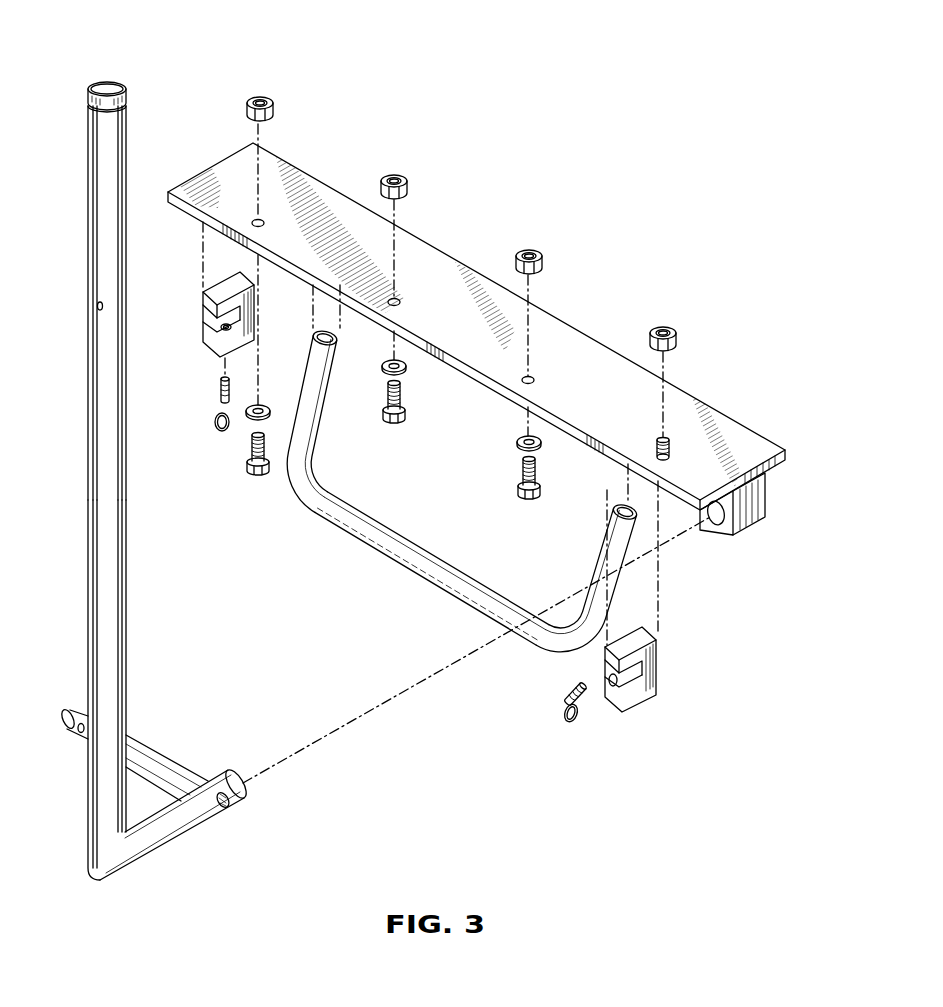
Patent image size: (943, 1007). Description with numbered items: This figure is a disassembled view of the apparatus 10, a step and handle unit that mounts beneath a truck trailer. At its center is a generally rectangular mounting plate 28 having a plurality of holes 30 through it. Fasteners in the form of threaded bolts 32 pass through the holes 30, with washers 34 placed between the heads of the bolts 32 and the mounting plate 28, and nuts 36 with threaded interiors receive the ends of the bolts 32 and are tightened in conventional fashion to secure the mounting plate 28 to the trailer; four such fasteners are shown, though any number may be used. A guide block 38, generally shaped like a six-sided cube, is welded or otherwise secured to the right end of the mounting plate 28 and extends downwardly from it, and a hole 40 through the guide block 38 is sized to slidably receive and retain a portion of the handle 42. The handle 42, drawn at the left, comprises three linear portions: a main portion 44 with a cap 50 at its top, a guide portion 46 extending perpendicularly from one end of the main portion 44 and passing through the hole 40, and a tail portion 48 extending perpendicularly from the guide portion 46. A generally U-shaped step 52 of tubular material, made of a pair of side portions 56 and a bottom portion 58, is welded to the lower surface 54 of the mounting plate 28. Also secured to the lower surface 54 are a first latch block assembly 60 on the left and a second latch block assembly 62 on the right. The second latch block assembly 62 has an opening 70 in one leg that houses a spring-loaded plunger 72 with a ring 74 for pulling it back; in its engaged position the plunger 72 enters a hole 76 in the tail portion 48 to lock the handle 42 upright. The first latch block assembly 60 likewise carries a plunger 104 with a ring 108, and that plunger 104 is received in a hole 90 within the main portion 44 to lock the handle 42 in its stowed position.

The apparatus 10 is at (606, 121).
The mounting plate 28 is at (229, 166).
The holes 30 is at (260, 219).
The threaded bolts 32 is at (255, 474).
The washers 34 is at (262, 407).
The nuts 36 is at (273, 100).
The guide block 38 is at (748, 536).
The hole 40 is at (713, 522).
The handle 42 is at (90, 190).
The main portion 44 is at (88, 372).
The guide portion 46 is at (171, 840).
The tail portion 48 is at (180, 728).
The cap 50 is at (111, 84).
The generally U-shaped step 52 is at (299, 507).
The lower surface 54 is at (465, 379).
The side portions 56 is at (323, 420).
The bottom portion 58 is at (441, 561).
The first latch block assembly 60 is at (203, 343).
The second latch block assembly 62 is at (654, 675).
The opening 70 is at (614, 687).
The plunger 72 is at (569, 687).
The ring 74 is at (570, 722).
The hole 76 is at (67, 729).
The hole 90 is at (96, 304).
The plunger 104 is at (219, 390).
The ring 108 is at (221, 432).